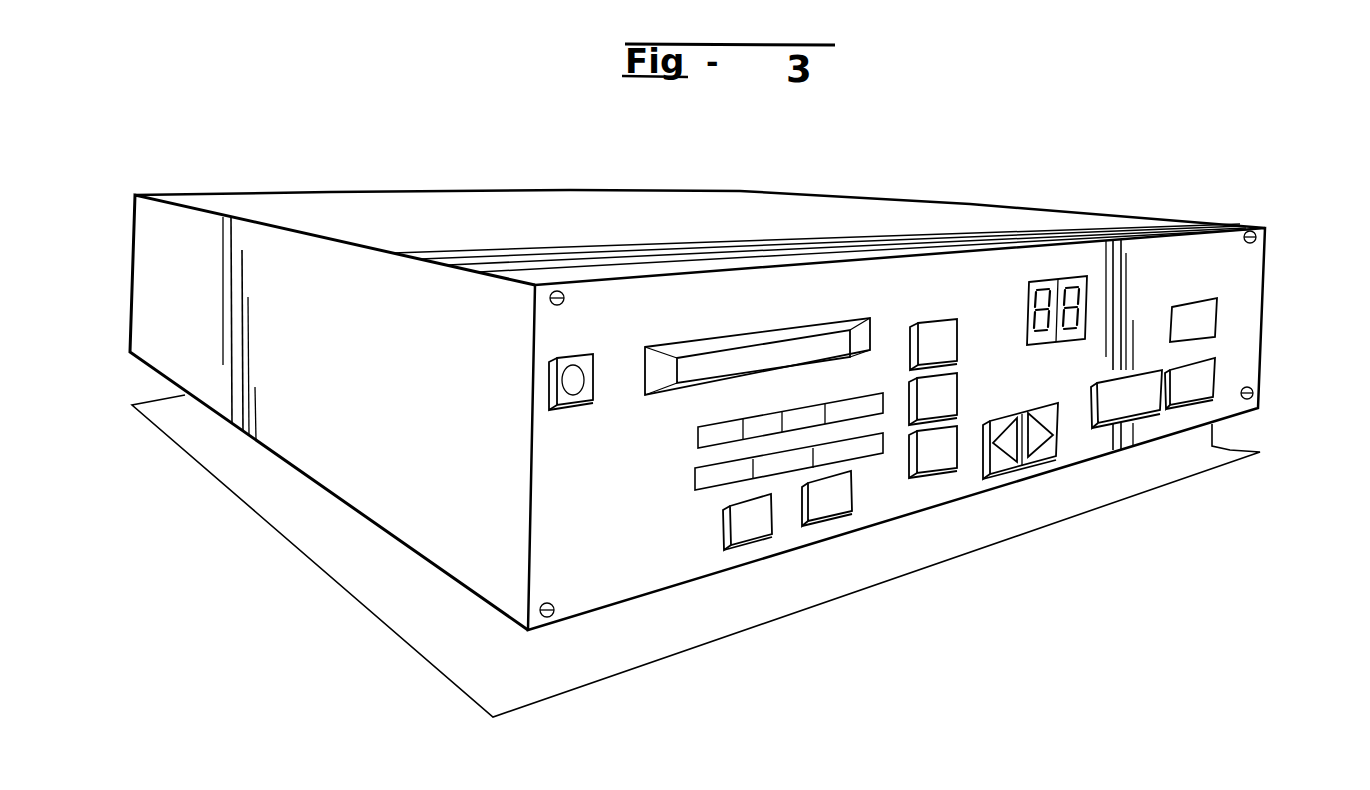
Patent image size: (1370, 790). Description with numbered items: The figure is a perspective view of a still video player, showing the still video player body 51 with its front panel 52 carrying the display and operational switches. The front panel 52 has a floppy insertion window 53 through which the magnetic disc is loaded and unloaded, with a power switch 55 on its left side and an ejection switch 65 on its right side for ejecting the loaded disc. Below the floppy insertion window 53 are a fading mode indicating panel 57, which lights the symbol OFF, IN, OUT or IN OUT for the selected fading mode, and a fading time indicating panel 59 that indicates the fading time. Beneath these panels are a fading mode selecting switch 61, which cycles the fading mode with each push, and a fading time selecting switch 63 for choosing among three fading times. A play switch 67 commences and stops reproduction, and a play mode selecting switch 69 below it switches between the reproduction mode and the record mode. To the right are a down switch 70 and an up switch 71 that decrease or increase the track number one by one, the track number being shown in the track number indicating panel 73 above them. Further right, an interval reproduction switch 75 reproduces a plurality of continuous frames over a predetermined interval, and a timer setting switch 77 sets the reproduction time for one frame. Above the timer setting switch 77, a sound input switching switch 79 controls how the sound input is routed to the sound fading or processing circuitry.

The still video player body 51 is at (917, 226).
The front panel 52 is at (1252, 308).
The floppy insertion window 53 is at (760, 343).
The power switch 55 is at (582, 357).
The fading mode indicating panel 57 is at (868, 392).
The fading time indicating panel 59 is at (870, 453).
The fading mode selecting switch 61 is at (750, 533).
The fading time selecting switch 63 is at (832, 513).
The ejection switch 65 is at (932, 335).
The play switch 67 is at (932, 478).
The play mode selecting switch 69 is at (962, 395).
The down switch 70 is at (1010, 458).
The up switch 71 is at (1037, 452).
The track number indicating panel 73 is at (1067, 275).
The interval reproduction switch 75 is at (1132, 403).
The timer setting switch 77 is at (1198, 392).
The sound input switching switch 79 is at (1195, 312).